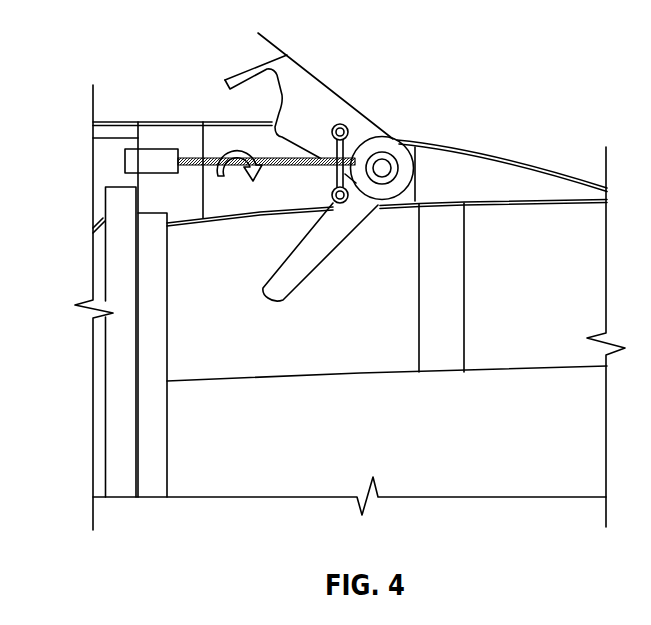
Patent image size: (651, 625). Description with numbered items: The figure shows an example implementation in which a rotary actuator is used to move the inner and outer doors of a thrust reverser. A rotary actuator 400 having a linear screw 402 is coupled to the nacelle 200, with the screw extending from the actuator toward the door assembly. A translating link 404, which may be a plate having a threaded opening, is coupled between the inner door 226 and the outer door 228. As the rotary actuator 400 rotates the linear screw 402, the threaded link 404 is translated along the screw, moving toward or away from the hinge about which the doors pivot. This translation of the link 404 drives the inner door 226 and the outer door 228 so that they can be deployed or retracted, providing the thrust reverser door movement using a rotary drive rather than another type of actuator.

The nacelle 200 is at (132, 122).
The inner door 226 is at (308, 273).
The outer door 228 is at (336, 92).
The rotary actuator 400 is at (125, 160).
The linear screw 402 is at (193, 157).
The translating link 404 is at (353, 140).